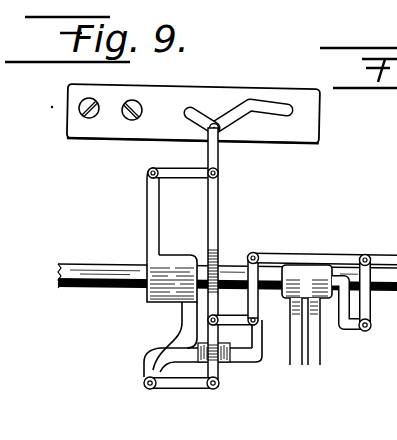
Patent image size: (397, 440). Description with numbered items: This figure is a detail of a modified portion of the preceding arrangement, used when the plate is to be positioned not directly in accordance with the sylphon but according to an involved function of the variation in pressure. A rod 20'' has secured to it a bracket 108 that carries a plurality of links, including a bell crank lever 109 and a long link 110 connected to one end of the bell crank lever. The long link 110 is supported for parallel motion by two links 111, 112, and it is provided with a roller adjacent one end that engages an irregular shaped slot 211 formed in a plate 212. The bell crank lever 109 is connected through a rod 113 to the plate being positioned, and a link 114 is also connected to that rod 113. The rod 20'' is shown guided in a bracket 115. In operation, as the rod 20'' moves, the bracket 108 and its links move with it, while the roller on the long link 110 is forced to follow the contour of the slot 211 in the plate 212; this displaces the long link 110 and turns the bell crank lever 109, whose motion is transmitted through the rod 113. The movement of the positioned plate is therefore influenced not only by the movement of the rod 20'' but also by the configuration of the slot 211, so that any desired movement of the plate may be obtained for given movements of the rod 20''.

The rod 20'' is at (227, 265).
The plate 212 is at (193, 113).
The irregular shaped slot 211 is at (278, 112).
The link 111 is at (185, 180).
The long link 110 is at (219, 223).
The bracket 108 is at (144, 303).
The bell crank lever 109 is at (238, 312).
The link 112 is at (185, 390).
The rod 113 is at (309, 253).
The link 114 is at (376, 313).
The bracket 115 is at (321, 333).